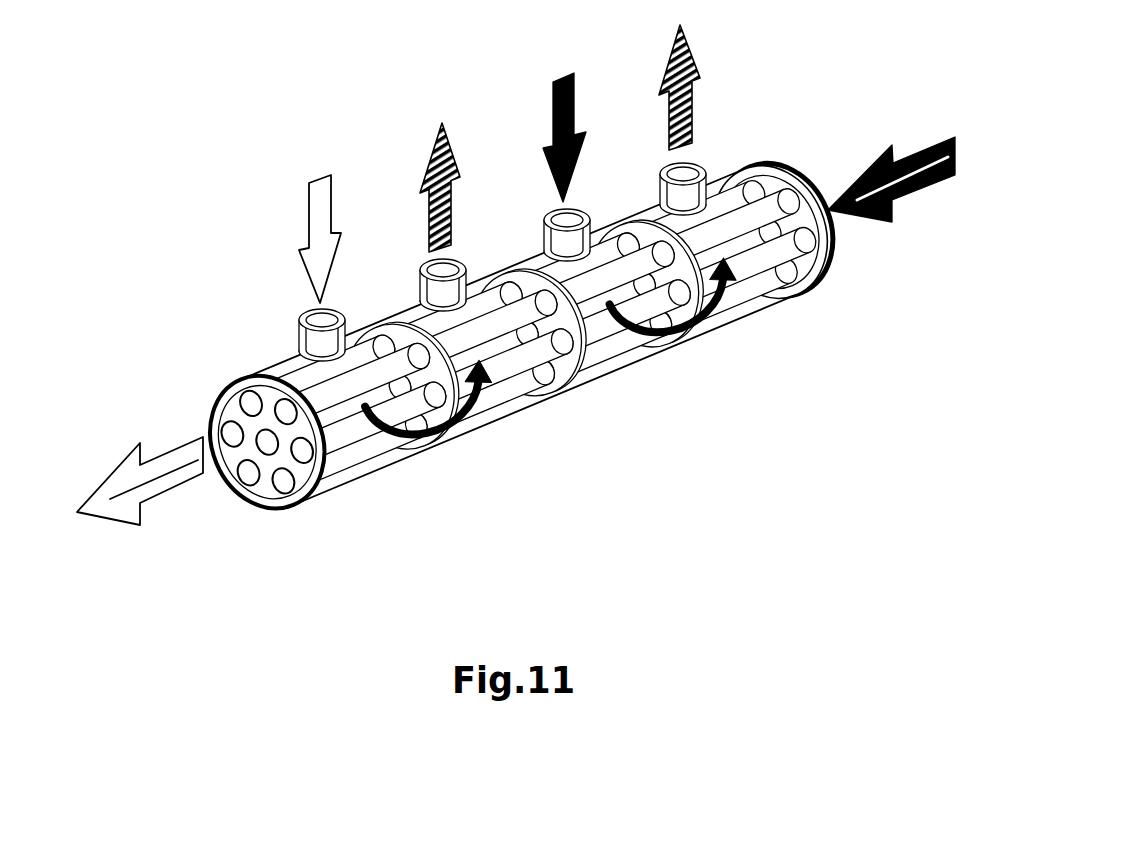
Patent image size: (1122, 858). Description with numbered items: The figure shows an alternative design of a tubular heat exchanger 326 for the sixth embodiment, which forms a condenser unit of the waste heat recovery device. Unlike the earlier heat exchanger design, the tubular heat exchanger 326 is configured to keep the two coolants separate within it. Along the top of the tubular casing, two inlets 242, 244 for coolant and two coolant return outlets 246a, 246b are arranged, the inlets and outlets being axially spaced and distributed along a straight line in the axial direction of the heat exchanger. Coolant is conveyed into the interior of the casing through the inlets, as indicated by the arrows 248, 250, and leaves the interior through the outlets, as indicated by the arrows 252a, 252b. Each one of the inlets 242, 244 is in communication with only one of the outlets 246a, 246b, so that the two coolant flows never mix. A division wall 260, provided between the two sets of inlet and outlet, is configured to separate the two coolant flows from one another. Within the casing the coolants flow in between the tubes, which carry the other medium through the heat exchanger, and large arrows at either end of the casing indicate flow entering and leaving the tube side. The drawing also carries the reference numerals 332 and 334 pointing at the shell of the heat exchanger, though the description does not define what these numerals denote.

The inlet 242 is at (581, 210).
The inlet 244 is at (300, 320).
The coolant return outlet 246a is at (423, 262).
The coolant return outlet 246b is at (703, 165).
The arrow 248 is at (578, 82).
The arrow 250 is at (317, 203).
The arrow 252a is at (433, 167).
The arrow 252b is at (700, 72).
The division wall 260 is at (563, 374).
The tubular heat exchanger 326 is at (757, 96).
The shell 332 is at (730, 350).
The shell bottom 334 is at (438, 472).